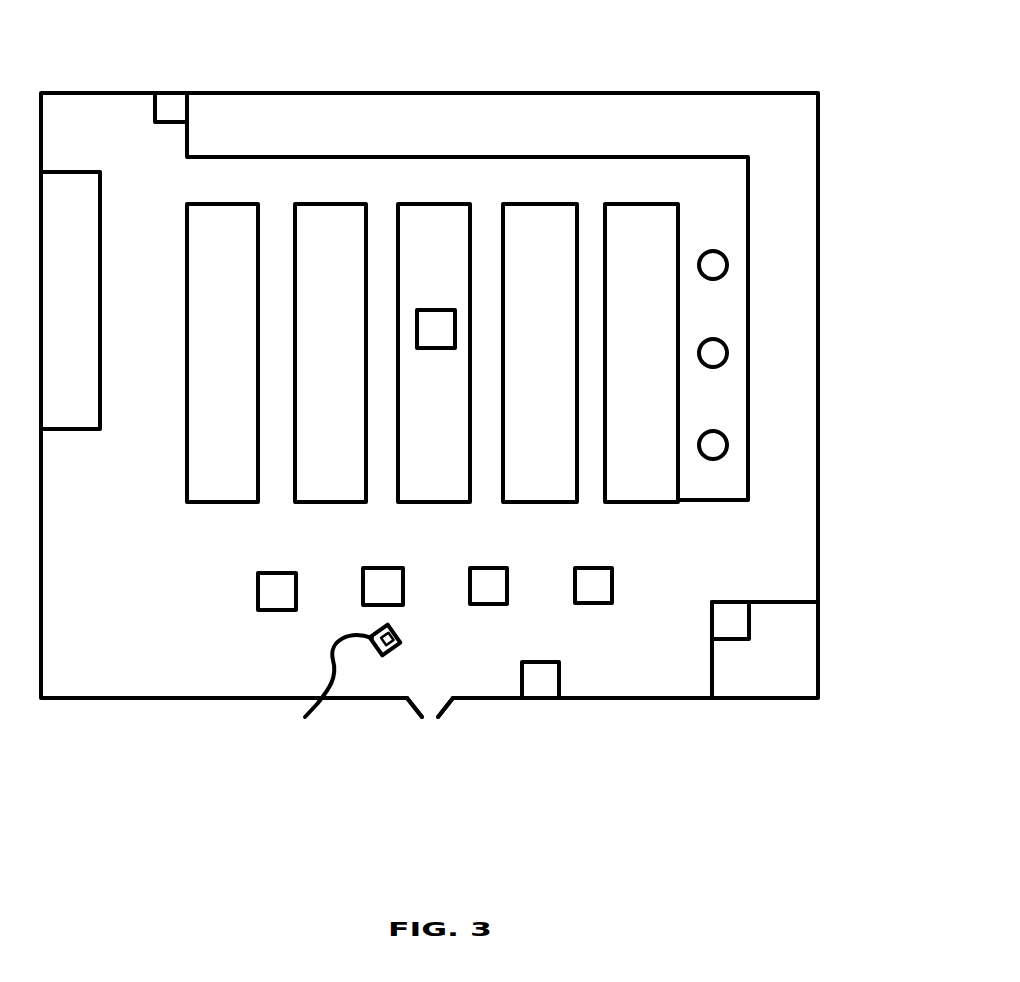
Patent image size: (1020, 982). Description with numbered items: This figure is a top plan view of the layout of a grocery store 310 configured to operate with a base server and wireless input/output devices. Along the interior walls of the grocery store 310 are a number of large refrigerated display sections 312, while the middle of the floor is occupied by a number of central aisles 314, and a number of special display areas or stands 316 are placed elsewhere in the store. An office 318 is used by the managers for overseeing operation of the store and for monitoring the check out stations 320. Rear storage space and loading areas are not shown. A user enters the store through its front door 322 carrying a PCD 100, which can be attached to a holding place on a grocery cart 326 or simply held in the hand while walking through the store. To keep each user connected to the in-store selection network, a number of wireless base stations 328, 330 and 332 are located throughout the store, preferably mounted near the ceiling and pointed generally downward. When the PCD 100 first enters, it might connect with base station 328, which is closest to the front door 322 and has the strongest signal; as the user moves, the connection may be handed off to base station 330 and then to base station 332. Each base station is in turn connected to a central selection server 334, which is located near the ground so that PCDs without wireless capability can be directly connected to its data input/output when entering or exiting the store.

The PCD 100 is at (392, 655).
The grocery store 310 is at (153, 698).
The refrigerated display sections 312 is at (76, 178).
The central aisles 314 is at (230, 222).
The special display areas or stands 316 is at (725, 265).
The office 318 is at (763, 682).
The check out stations 320 is at (275, 597).
The front door 322 is at (440, 713).
The grocery cart 326 is at (329, 691).
The wireless base station 328 is at (728, 615).
The wireless base station 330 is at (440, 320).
The wireless base station 332 is at (175, 100).
The central selection server 334 is at (533, 683).